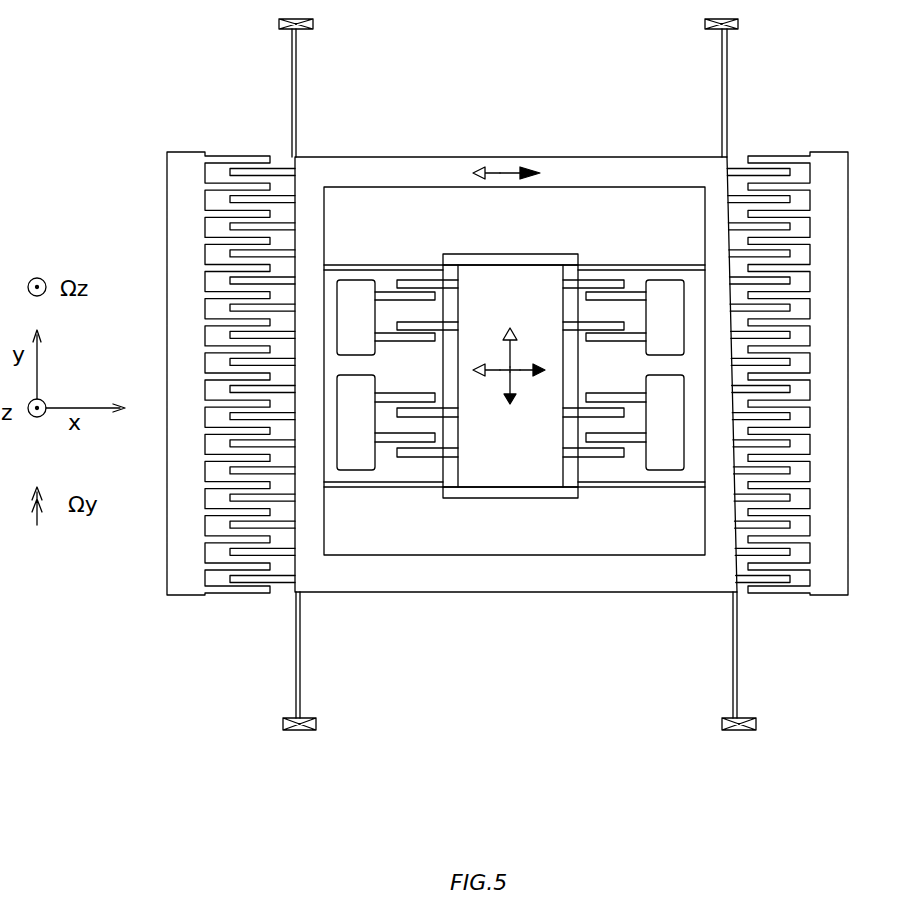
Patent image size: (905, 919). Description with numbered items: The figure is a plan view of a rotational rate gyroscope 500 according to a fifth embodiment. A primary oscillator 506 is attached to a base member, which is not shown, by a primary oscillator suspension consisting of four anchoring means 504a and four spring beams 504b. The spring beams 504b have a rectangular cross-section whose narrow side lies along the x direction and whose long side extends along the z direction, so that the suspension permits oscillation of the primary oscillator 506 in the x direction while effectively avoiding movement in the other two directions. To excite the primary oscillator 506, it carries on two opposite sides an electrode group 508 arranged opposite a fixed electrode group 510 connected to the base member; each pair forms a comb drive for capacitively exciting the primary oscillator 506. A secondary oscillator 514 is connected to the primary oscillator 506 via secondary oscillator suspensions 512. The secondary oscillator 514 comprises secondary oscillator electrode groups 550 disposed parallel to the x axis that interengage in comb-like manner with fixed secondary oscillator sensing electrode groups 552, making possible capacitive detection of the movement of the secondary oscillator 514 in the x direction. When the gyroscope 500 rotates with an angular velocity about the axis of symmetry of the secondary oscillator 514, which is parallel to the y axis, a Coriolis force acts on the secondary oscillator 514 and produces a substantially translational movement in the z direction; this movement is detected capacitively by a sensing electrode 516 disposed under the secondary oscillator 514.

The rotational rate gyroscope 500 is at (136, 48).
The anchoring means 504a is at (316, 724).
The spring beams 504b is at (298, 605).
The primary oscillator 506 is at (525, 572).
The electrode group 508 is at (252, 577).
The fixed electrode group 510 is at (188, 568).
The secondary oscillator suspensions 512 is at (392, 483).
The secondary oscillator 514 is at (530, 462).
The sensing electrode 516 is at (495, 254).
The secondary oscillator electrode groups 550 is at (418, 322).
The fixed secondary oscillator sensing electrode groups 552 is at (385, 290).